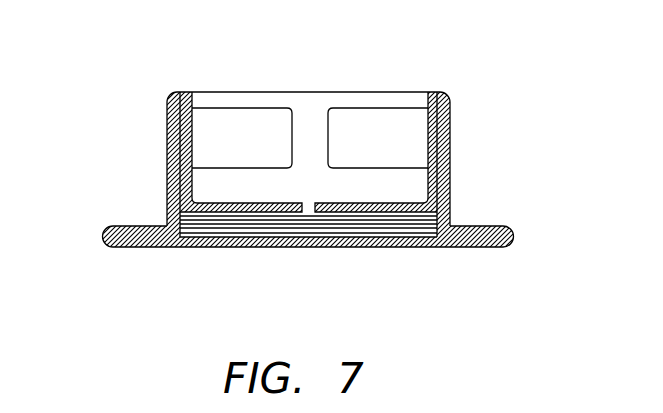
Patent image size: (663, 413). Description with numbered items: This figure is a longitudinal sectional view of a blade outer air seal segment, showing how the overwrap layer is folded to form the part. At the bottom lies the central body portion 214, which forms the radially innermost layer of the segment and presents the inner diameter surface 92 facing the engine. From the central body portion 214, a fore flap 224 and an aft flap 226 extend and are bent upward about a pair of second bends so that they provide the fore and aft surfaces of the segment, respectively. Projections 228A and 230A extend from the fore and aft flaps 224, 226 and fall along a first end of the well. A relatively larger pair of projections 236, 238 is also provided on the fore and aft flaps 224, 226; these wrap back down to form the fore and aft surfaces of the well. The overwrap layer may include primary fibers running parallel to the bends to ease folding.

The inner diameter surface 92 is at (383, 248).
The central body portion 214 is at (308, 248).
The fore flap 224 is at (449, 188).
The aft flap 226 is at (167, 158).
The projection 228A is at (368, 125).
The projection 230A is at (237, 128).
The projection 236 is at (383, 208).
The projection 238 is at (261, 220).